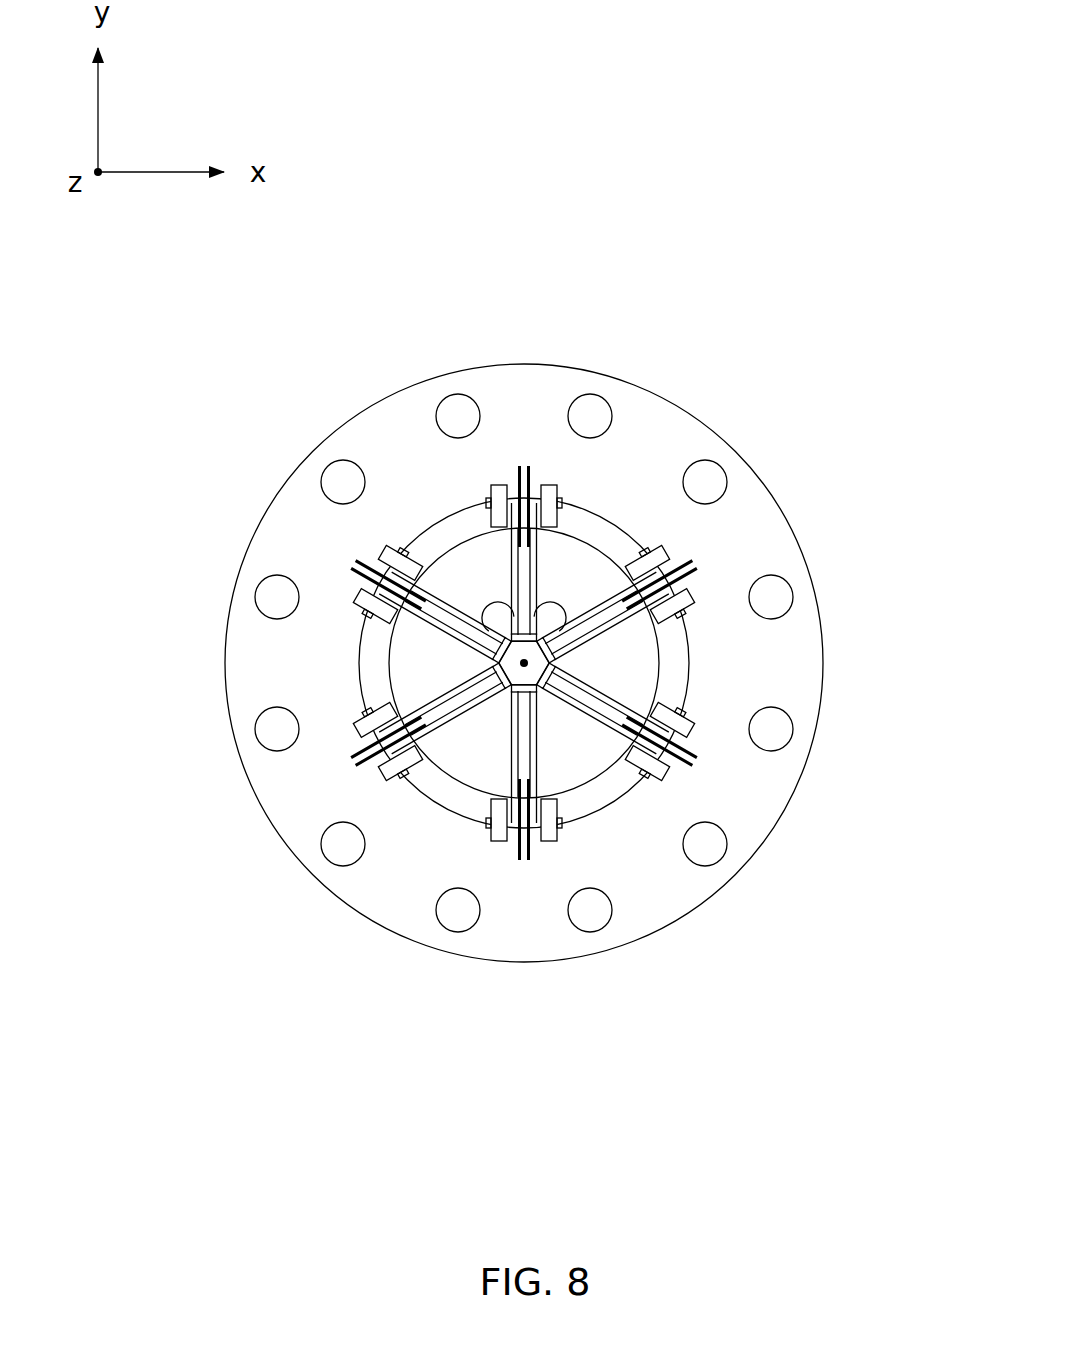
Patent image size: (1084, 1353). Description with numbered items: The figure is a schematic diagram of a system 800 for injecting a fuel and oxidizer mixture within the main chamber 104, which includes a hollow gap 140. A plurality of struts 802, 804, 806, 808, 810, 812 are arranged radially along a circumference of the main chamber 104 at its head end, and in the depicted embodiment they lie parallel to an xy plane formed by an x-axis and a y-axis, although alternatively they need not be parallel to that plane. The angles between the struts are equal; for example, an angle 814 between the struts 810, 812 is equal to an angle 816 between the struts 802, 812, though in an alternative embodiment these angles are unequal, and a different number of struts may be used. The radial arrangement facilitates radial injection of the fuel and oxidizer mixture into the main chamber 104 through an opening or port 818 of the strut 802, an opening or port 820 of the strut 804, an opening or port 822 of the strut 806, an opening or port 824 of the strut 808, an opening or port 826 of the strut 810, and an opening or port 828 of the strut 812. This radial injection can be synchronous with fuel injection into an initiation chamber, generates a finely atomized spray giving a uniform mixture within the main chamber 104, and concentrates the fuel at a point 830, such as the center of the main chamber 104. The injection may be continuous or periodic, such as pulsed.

The system 800 is at (773, 153).
The main chamber 104 is at (443, 787).
The hollow gap 140 is at (582, 745).
The strut 802 is at (541, 641).
The strut 804 is at (692, 656).
The strut 806 is at (537, 747).
The strut 808 is at (437, 700).
The strut 810 is at (444, 612).
The strut 812 is at (575, 505).
The angle 814 is at (490, 610).
The angle 816 is at (593, 608).
The opening or port 818 is at (521, 458).
The opening or port 820 is at (705, 560).
The opening or port 822 is at (703, 762).
The opening or port 824 is at (520, 870).
The opening or port 826 is at (337, 770).
The opening or port 828 is at (337, 550).
The point 830 is at (513, 683).